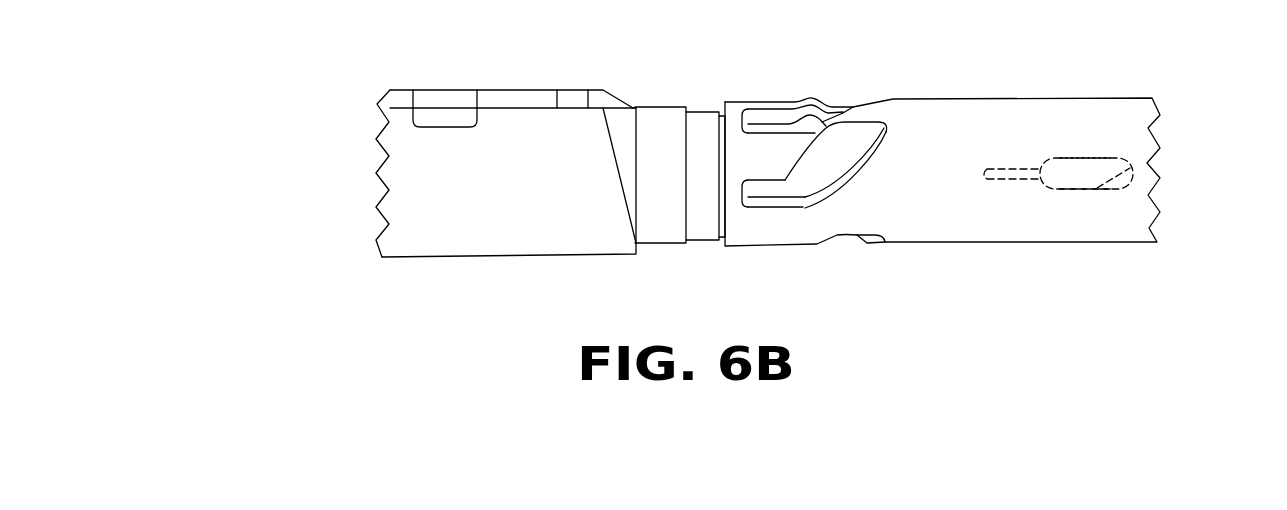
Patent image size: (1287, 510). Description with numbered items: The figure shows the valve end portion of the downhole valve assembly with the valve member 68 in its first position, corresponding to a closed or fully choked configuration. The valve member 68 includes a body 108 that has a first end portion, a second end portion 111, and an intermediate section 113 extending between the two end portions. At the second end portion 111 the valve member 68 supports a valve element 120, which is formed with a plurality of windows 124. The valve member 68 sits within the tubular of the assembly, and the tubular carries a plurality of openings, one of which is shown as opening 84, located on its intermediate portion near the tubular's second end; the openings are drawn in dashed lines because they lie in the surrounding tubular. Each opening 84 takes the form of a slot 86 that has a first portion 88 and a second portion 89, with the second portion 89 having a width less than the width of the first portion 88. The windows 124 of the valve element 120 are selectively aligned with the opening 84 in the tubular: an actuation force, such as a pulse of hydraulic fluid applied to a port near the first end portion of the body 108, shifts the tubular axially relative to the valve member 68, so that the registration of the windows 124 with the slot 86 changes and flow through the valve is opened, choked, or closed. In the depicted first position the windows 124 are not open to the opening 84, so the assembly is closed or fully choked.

The valve member 68 is at (448, 193).
The body 108 is at (390, 184).
The intermediate section 113 is at (392, 94).
The second end portion 111 is at (660, 118).
The valve element 120 is at (934, 285).
The windows 124 is at (804, 203).
The first portion 88 is at (1133, 168).
The second portion 89 is at (1030, 185).
The slot 86 is at (1090, 135).
The opening 84 is at (1083, 223).